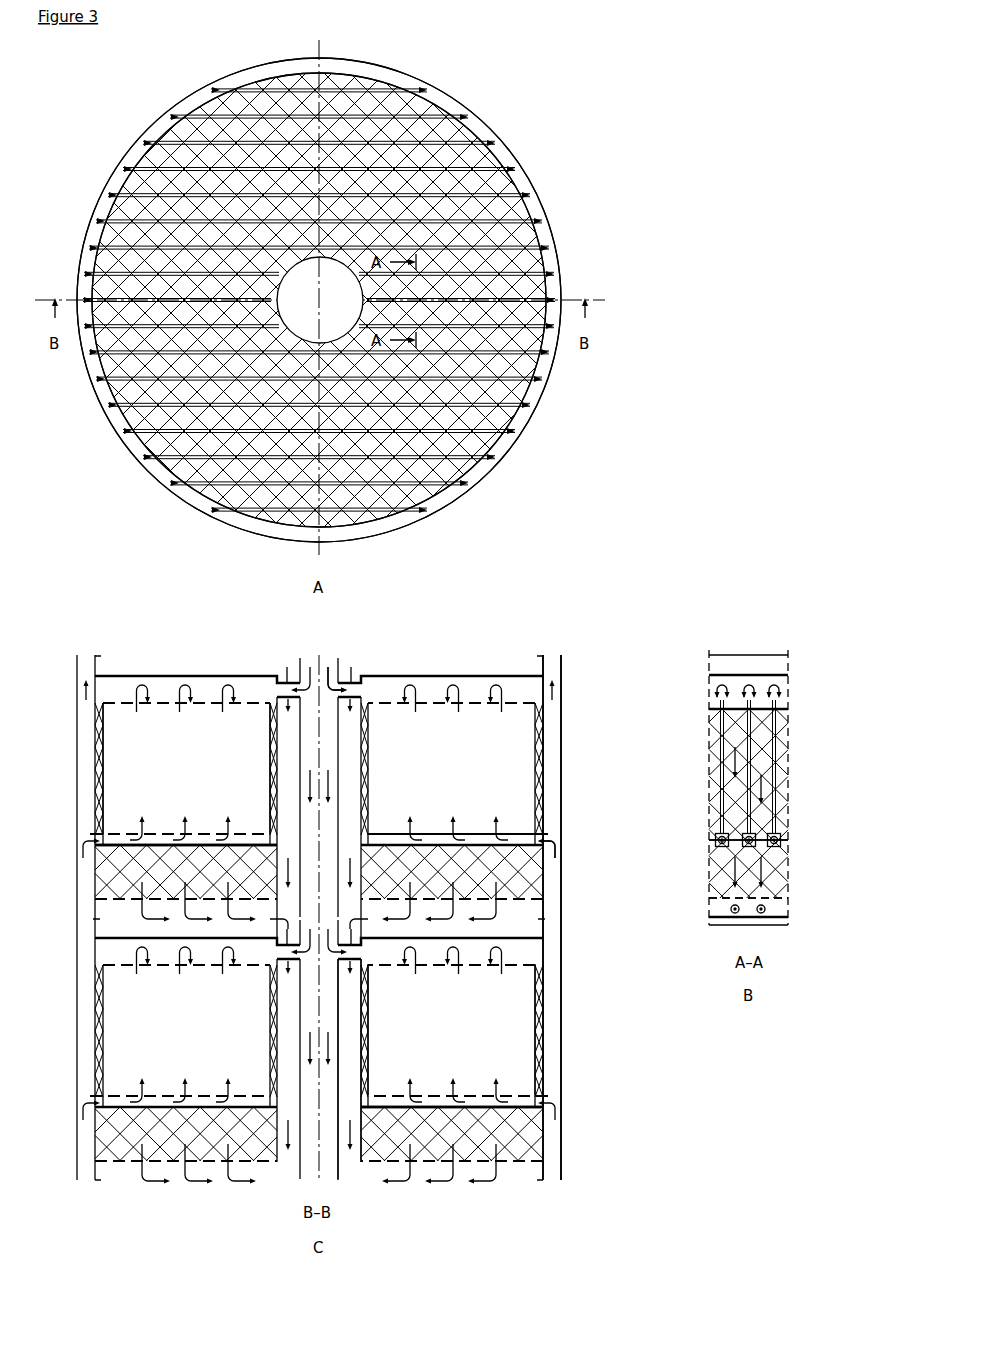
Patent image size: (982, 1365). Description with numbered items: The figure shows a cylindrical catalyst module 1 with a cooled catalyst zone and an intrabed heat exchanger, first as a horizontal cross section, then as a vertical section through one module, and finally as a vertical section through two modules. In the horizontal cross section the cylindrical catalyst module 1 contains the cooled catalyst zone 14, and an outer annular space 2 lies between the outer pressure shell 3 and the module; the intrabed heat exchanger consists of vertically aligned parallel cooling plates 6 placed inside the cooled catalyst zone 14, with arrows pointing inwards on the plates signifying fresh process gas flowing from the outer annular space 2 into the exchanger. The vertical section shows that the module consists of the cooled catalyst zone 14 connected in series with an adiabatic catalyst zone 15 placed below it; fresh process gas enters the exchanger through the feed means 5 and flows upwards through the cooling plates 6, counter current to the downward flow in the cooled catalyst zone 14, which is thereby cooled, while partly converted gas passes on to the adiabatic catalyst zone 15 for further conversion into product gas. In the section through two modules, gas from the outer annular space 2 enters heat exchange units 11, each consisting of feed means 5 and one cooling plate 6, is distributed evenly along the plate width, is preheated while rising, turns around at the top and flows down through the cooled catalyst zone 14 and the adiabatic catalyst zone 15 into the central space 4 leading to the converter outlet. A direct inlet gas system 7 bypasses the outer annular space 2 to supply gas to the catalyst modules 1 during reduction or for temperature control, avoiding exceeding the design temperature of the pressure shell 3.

In FIG. 3A, the cylindrical catalyst module 1 is at (535, 234).
In FIG. 3C, the cylindrical catalyst module 1 is at (548, 667).
In FIG. 3A, the outer annular space 2 is at (525, 416).
In FIG. 3C, the outer annular space 2 is at (553, 721).
In FIG. 3A, the outer pressure shell 3 is at (558, 366).
In FIG. 3C, the outer pressure shell 3 is at (565, 771).
In FIG. 3C, the central space 4 is at (350, 1098).
In FIG. 3B, the feed means 5 is at (722, 846).
In FIG. 3C, the feed means 5 is at (520, 1101).
In FIG. 3A, the cooling plate 6 is at (490, 195).
In FIG. 3B, the cooling plate 6 is at (722, 812).
In FIG. 3C, the cooling plate 6 is at (505, 1030).
In FIG. 3C, the direct inlet gas system 7 is at (342, 688).
In FIG. 3C, the heat exchange unit 11 is at (520, 841).
In FIG. 3A, the cooled catalyst zone 14 is at (475, 157).
In FIG. 3B, the cooled catalyst zone 14 is at (800, 705).
In FIG. 3C, the cooled catalyst zone 14 is at (68, 703).
In FIG. 3B, the adiabatic catalyst zone 15 is at (800, 843).
In FIG. 3C, the adiabatic catalyst zone 15 is at (68, 843).